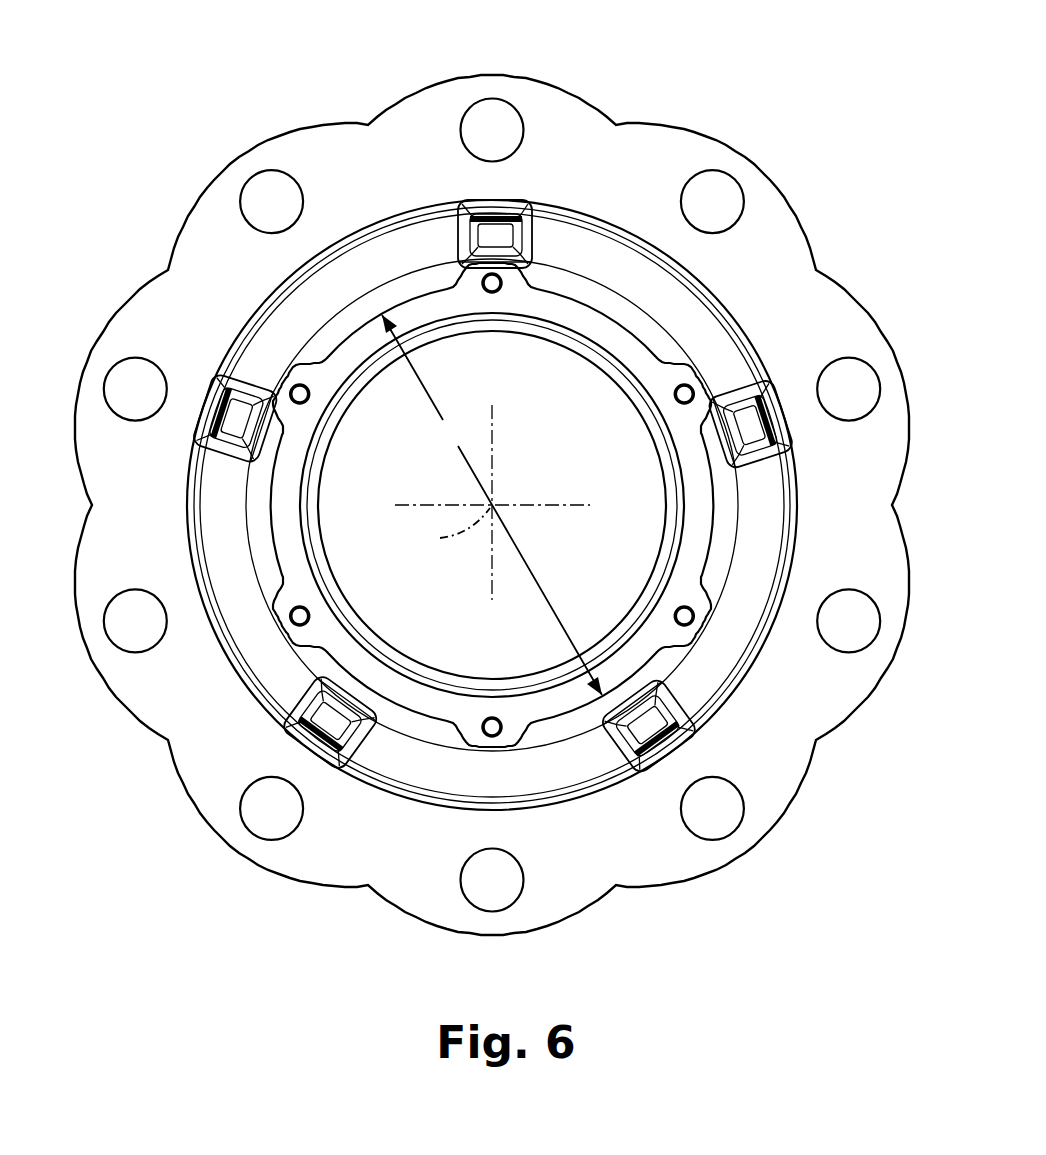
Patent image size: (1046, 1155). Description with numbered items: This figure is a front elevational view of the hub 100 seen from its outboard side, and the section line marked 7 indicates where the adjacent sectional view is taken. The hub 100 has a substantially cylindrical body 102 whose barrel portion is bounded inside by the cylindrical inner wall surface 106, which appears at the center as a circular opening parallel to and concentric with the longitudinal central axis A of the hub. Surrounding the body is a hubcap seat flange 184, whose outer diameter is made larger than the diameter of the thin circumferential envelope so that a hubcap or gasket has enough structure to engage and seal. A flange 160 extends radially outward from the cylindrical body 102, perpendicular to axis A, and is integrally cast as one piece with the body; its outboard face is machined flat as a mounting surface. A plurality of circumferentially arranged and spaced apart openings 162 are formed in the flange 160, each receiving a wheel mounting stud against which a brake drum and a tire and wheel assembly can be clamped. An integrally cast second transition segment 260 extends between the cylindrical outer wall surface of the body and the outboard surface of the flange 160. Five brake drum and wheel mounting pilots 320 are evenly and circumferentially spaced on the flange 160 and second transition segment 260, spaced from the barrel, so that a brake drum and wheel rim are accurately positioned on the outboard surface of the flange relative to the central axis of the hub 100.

The hub 100 is at (750, 114).
The cylindrical body 102 is at (752, 518).
The cylindrical inner wall surface 106 is at (519, 332).
The flange 160 is at (768, 277).
The openings 162 is at (490, 106).
The hubcap seat flange 184 is at (545, 705).
The second transition segment 260 is at (710, 658).
The brake drum and wheel mounting pilots 320 is at (482, 212).
The section line 7- 7 is at (493, 48).